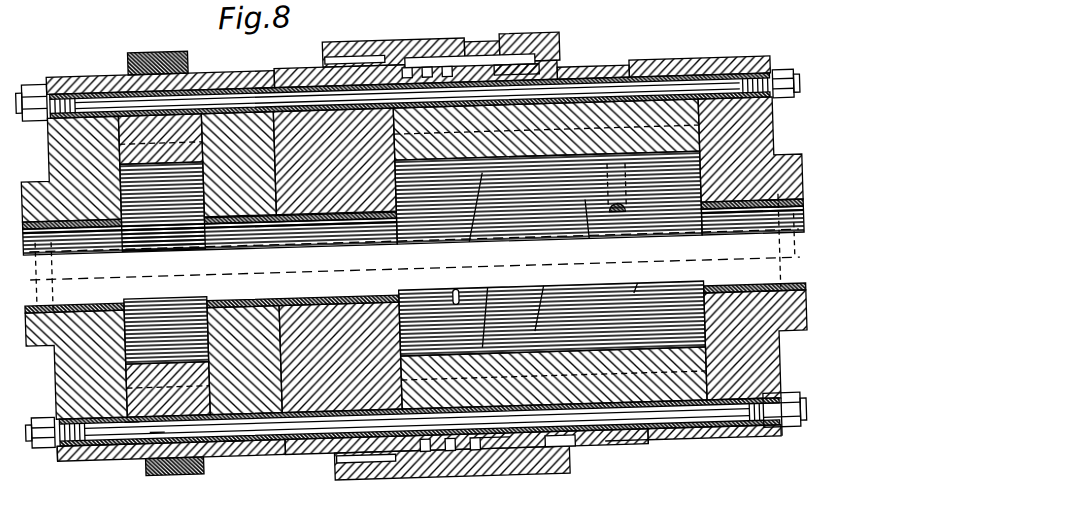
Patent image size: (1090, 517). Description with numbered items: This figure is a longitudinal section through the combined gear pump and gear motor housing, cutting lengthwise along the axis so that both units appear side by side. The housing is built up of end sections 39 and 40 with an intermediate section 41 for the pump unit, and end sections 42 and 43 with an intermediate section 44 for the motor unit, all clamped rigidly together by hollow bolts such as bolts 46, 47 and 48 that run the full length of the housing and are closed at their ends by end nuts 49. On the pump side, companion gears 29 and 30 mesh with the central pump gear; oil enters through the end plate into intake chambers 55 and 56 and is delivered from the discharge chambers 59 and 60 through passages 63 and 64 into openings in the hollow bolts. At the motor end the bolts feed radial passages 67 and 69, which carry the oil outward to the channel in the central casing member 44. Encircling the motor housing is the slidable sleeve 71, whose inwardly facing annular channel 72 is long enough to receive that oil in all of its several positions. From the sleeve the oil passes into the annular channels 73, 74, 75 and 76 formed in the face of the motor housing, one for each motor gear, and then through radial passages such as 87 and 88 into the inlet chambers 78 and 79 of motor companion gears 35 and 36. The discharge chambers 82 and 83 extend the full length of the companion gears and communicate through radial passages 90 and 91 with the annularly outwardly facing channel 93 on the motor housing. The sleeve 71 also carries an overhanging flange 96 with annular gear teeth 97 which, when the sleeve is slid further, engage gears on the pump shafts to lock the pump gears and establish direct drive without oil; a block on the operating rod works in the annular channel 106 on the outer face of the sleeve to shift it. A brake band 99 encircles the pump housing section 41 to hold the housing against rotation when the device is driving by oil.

The companion gear 29 is at (110, 338).
The companion gear 30 is at (52, 168).
The companion gear 35 is at (543, 290).
The companion gear 36 is at (520, 180).
The end section 39 is at (70, 455).
The end section 40 is at (222, 440).
The intermediate section 41 is at (130, 452).
The end section 42 is at (268, 440).
The end section 43 is at (764, 448).
The intermediate section 44 is at (700, 491).
The hollow bolt 46 is at (228, 462).
The hollow bolt 47 is at (226, 256).
The hollow bolt 48 is at (238, 69).
The end nuts 49 is at (37, 73).
The chamber 55 is at (128, 282).
The chamber 56 is at (130, 66).
The chamber 59 is at (122, 440).
The chamber 60 is at (143, 216).
The passage 63 is at (152, 448).
The passage 64 is at (167, 236).
The radial passage 67 is at (582, 448).
The radial passage 69 is at (605, 72).
The slidable sleeve 71 is at (540, 37).
The annular channel 72 is at (568, 474).
The annular channel 73 is at (490, 452).
The annular channel 74 is at (468, 453).
The annular channel 75 is at (443, 453).
The annular channel 76 is at (418, 453).
The oil inlet chamber 78 is at (637, 290).
The oil inlet chamber 79 is at (470, 244).
The oil discharge chamber 82 is at (487, 290).
The oil discharge chamber 83 is at (590, 244).
The radial passage 87 is at (452, 298).
The radial passage 88 is at (415, 58).
The radial passage 90 is at (640, 448).
The radial passage 91 is at (626, 222).
The annular channel 93 is at (640, 67).
The overhanging flange 96 is at (366, 42).
The annular gear teeth 97 is at (318, 452).
The brake band 99 is at (182, 468).
The annular channel 106 is at (478, 44).